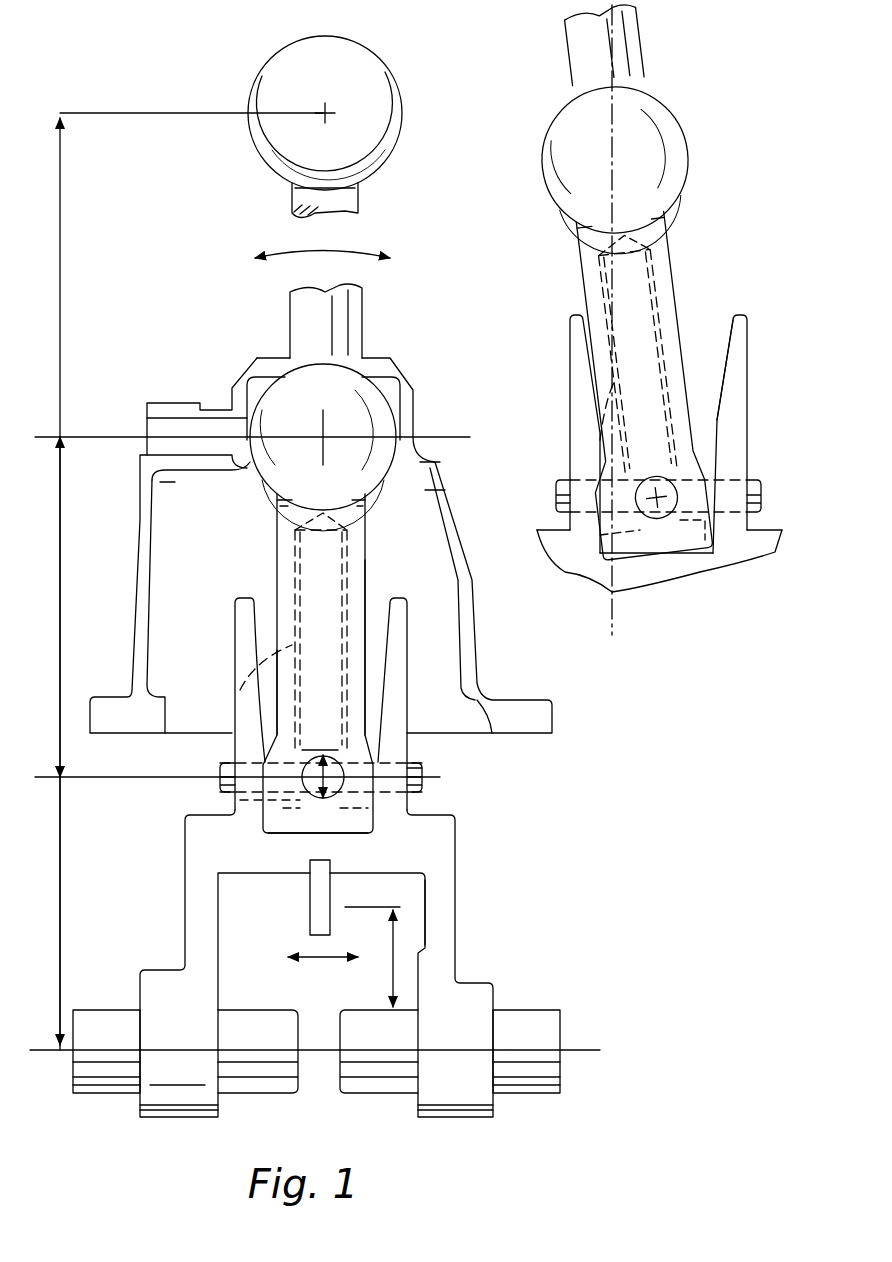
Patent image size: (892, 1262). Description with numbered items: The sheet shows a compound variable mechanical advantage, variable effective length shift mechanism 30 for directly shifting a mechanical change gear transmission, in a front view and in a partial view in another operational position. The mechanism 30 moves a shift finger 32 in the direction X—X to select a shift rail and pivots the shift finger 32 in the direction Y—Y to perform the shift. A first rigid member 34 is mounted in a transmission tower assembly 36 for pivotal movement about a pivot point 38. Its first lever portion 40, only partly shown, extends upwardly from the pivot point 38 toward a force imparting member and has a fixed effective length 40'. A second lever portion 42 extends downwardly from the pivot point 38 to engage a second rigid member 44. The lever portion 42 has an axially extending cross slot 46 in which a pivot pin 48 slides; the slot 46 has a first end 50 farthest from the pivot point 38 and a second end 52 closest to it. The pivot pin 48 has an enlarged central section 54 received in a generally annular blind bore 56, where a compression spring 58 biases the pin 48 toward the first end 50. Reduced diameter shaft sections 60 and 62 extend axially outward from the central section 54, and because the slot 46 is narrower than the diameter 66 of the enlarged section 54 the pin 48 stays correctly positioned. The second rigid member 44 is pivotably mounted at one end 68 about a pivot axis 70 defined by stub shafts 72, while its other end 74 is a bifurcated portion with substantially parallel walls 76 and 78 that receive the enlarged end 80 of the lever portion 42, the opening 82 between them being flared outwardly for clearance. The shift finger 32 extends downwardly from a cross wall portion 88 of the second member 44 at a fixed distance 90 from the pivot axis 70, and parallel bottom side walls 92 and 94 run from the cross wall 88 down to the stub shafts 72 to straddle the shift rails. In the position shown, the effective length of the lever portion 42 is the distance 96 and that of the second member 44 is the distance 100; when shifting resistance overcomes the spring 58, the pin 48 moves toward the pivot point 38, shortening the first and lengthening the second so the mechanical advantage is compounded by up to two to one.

In FIG. 1, the shift mechanism 30 is at (430, 338).
In FIG. 2, the shift mechanism 30 is at (692, 68).
In FIG. 1, the shift finger 32 is at (312, 897).
In FIG. 1, the first rigid member 34 is at (275, 333).
In FIG. 2, the first rigid member 34 is at (530, 145).
In FIG. 1, the transmission tower assembly 36 is at (462, 572).
In FIG. 1, the pivot point 38 is at (328, 435).
In FIG. 2, the pivot point 38 is at (620, 157).
In FIG. 1, the first lever portion 40 is at (349, 321).
In FIG. 2, the first lever portion 40 is at (621, 44).
In FIG. 1, the fixed effective length 40' is at (232, 184).
In FIG. 1, the second lever portion 42 is at (270, 548).
In FIG. 2, the second lever portion 42 is at (572, 258).
In FIG. 1, the second rigid member 44 is at (458, 855).
In FIG. 2, the second rigid member 44 is at (750, 418).
In FIG. 1, the cross slot 46 is at (355, 662).
In FIG. 1, the pivot pin 48 is at (428, 785).
In FIG. 2, the pivot pin 48 is at (765, 490).
In FIG. 1, the first end 50 is at (270, 798).
In FIG. 2, the first end 50 is at (600, 540).
In FIG. 1, the second end 52 is at (285, 642).
In FIG. 2, the second end 52 is at (583, 378).
In FIG. 1, the enlarged central section 54 is at (300, 775).
In FIG. 2, the enlarged central section 54 is at (655, 493).
In FIG. 2, the blind bore 56 is at (680, 550).
In FIG. 1, the compression spring 58 is at (348, 565).
In FIG. 2, the compression spring 58 is at (660, 292).
In FIG. 1, the shaft section 60 is at (415, 765).
In FIG. 1, the shaft section 62 is at (215, 768).
In FIG. 1, the diameter 66 is at (378, 730).
In FIG. 1, the one end 68 is at (460, 1100).
In FIG. 1, the pivot axis 70 is at (535, 1050).
In FIG. 1, the stub shafts 72 is at (107, 1078).
In FIG. 1, the other end 74 is at (230, 630).
In FIG. 2, the other end 74 is at (548, 455).
In FIG. 1, the wall 76 is at (398, 615).
In FIG. 2, the wall 76 is at (740, 332).
In FIG. 1, the wall 78 is at (242, 600).
In FIG. 2, the wall 78 is at (575, 330).
In FIG. 1, the enlarged end 80 is at (373, 818).
In FIG. 2, the opening 82 is at (695, 330).
In FIG. 1, the cross wall portion 88 is at (252, 848).
In FIG. 1, the fixed distance 90 is at (393, 975).
In FIG. 1, the bottom side wall 92 is at (440, 960).
In FIG. 1, the bottom side wall 94 is at (188, 953).
In FIG. 1, the distance 96 is at (55, 590).
In FIG. 1, the distance 100 is at (55, 892).